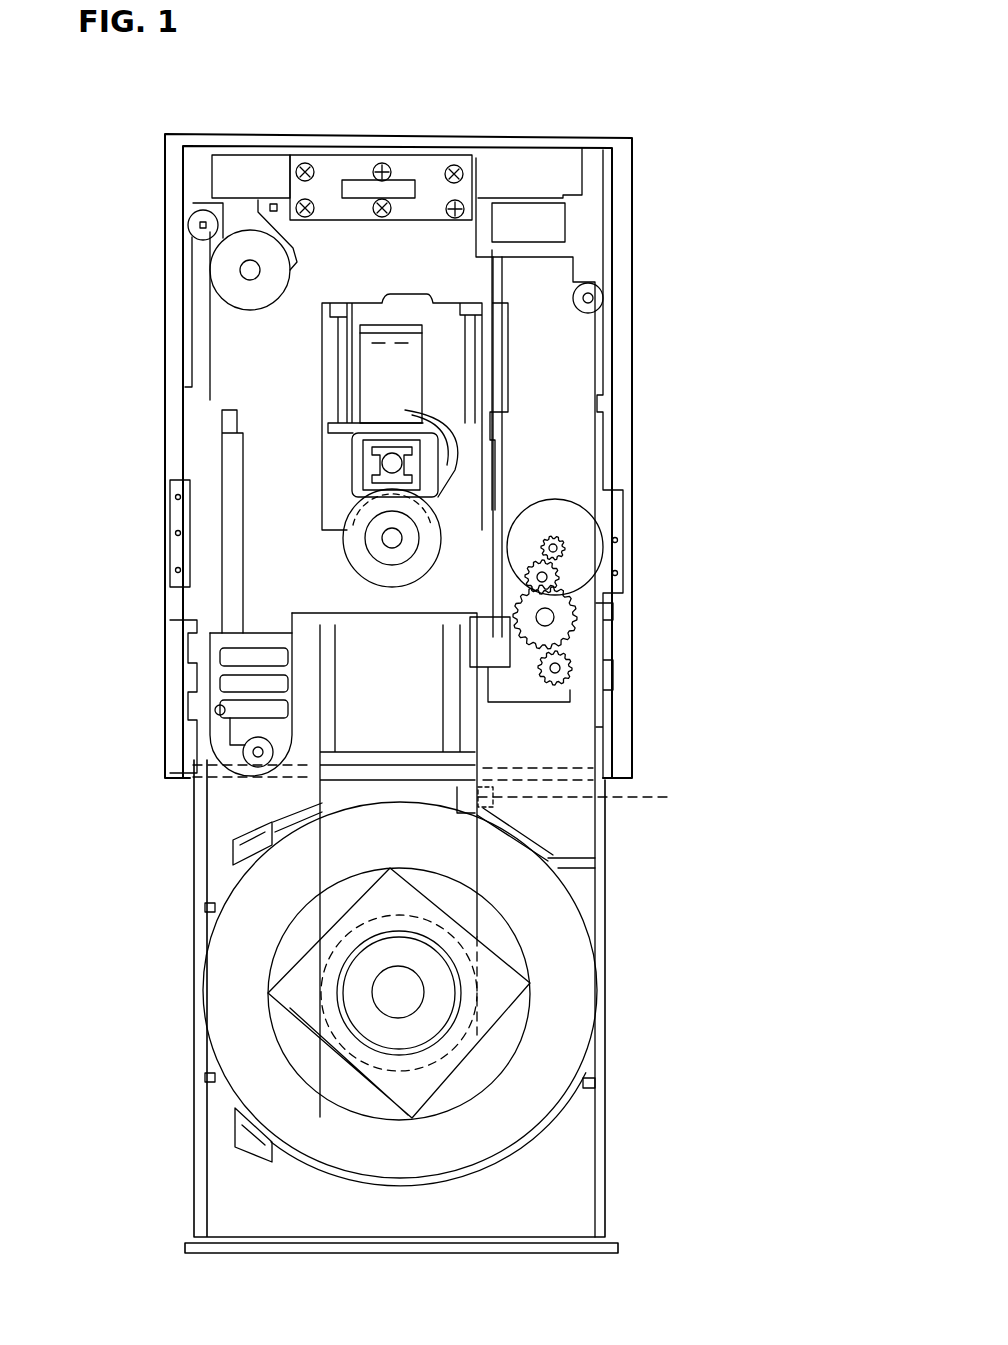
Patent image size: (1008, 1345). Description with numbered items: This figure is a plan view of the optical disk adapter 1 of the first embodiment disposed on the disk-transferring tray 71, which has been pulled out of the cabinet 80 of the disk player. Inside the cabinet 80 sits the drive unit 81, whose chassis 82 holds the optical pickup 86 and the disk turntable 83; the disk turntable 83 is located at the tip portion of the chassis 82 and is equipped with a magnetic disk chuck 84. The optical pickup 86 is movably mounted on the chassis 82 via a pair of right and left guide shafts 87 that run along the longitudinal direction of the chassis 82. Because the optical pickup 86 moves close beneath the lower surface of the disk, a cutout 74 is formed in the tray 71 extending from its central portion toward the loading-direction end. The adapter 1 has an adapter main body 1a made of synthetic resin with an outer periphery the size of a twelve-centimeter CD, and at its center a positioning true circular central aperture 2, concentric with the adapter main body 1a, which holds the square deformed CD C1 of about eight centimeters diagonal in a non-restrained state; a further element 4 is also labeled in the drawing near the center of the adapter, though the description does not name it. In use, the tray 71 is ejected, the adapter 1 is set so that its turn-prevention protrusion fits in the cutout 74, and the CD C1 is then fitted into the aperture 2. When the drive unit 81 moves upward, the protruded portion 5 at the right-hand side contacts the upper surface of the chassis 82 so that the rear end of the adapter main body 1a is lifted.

The cabinet 80 is at (633, 178).
The drive unit 81 is at (223, 330).
The chassis 82 is at (268, 362).
The guide shafts 87 is at (333, 335).
The optical pickup 86 is at (410, 463).
The magnetic disk chuck 84 is at (380, 543).
The disk turntable 83 is at (477, 520).
The protruded portion 5 is at (451, 865).
The hub 4 is at (430, 853).
The optical disk adapter 1 is at (545, 910).
The adapter main body 1a is at (565, 962).
The positioning true circular central aperture 2 is at (505, 1028).
The disk-transferring tray 71 is at (568, 1148).
The cutout 74 is at (333, 907).
The square deformed CD C1 is at (290, 1003).